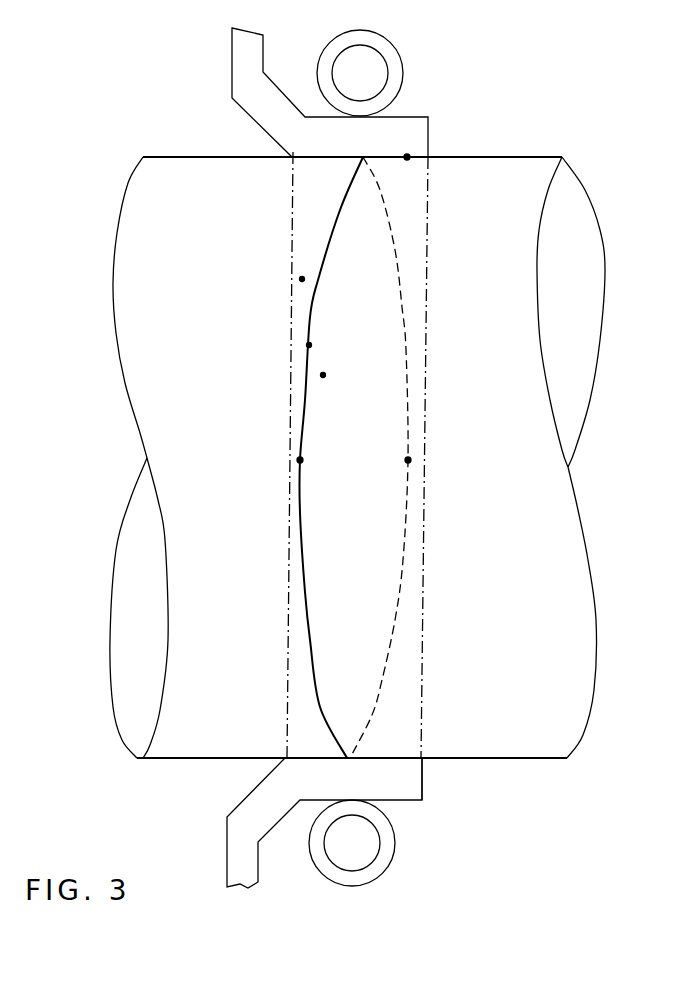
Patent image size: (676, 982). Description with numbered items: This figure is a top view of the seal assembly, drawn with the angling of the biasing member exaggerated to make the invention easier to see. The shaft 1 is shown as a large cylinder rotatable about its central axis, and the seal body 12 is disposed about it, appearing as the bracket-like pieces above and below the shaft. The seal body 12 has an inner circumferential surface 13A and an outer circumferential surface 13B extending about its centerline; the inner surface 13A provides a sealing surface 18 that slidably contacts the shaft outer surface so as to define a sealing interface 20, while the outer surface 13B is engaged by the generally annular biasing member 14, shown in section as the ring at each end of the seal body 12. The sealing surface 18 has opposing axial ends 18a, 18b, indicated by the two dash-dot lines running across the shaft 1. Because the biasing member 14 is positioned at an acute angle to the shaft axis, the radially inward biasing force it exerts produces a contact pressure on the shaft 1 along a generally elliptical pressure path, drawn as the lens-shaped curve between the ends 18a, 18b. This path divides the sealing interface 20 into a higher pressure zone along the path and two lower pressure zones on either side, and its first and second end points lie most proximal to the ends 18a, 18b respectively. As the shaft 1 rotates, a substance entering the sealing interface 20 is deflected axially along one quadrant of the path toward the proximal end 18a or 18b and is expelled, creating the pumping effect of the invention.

The shaft 1 is at (583, 648).
The seal body 12 is at (228, 60).
The inner circumferential surface 13A is at (301, 757).
The outer circumferential surface 13B is at (410, 802).
The biasing member 14 is at (400, 53).
The sealing surface 18 is at (394, 755).
The first axial end of the sealing surface 18a is at (292, 208).
The second axial end of the sealing surface 18b is at (430, 222).
The sealing interface 20 is at (407, 157).